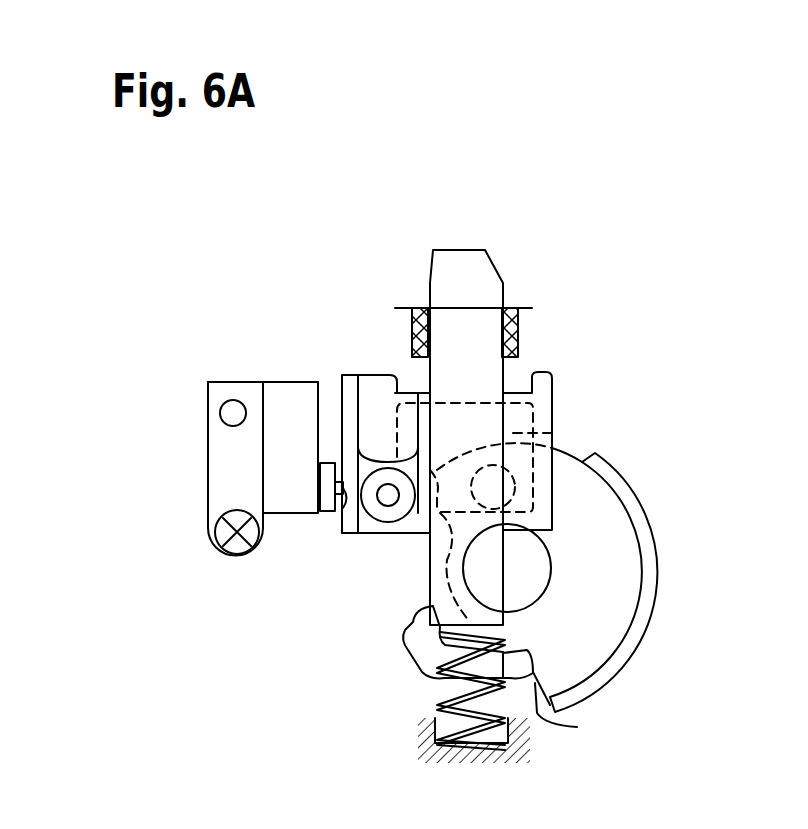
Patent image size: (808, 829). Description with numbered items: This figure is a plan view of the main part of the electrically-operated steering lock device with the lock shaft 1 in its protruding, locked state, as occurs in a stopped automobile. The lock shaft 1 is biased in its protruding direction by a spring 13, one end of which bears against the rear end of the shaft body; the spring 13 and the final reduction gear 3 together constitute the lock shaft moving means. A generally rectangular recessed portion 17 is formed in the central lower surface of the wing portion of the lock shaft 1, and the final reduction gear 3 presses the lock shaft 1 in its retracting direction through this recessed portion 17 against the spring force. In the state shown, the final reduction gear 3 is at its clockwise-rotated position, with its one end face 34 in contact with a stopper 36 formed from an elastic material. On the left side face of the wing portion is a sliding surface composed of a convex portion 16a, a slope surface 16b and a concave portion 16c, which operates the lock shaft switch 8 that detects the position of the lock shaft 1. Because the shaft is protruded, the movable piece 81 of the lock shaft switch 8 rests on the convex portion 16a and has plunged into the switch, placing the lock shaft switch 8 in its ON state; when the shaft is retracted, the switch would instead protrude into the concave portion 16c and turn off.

The lock shaft 1 is at (553, 382).
The final reduction gear 3 is at (620, 580).
The lock shaft switch 8 is at (277, 448).
The movable piece 81 is at (340, 513).
The spring 13 is at (423, 673).
The convex portion 16a is at (343, 513).
The slope surface 16b is at (352, 440).
The concave portion 16c is at (348, 455).
The recessed portion 17 is at (553, 432).
The one end face 34 is at (577, 727).
The stopper 36 is at (523, 663).